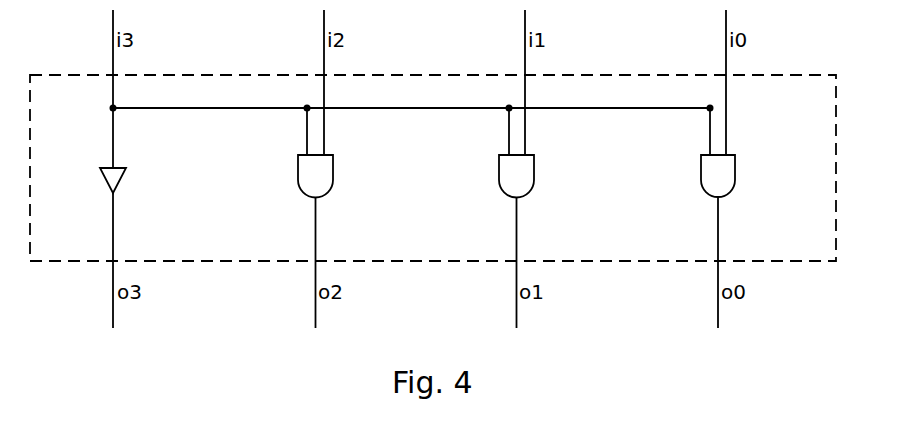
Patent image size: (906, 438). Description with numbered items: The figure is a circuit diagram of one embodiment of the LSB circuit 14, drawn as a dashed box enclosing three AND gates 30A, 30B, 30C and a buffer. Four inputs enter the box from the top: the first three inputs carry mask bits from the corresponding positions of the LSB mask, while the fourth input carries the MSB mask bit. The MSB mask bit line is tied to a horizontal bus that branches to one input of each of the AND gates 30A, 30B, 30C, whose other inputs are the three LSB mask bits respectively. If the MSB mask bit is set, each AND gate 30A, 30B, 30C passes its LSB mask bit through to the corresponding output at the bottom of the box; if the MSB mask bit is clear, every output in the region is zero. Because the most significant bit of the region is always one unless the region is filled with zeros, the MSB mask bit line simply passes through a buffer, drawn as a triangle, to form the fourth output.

The LSB circuit 14 is at (798, 157).
The AND gate 30A is at (678, 180).
The AND gate 30B is at (476, 180).
The AND gate 30C is at (275, 180).